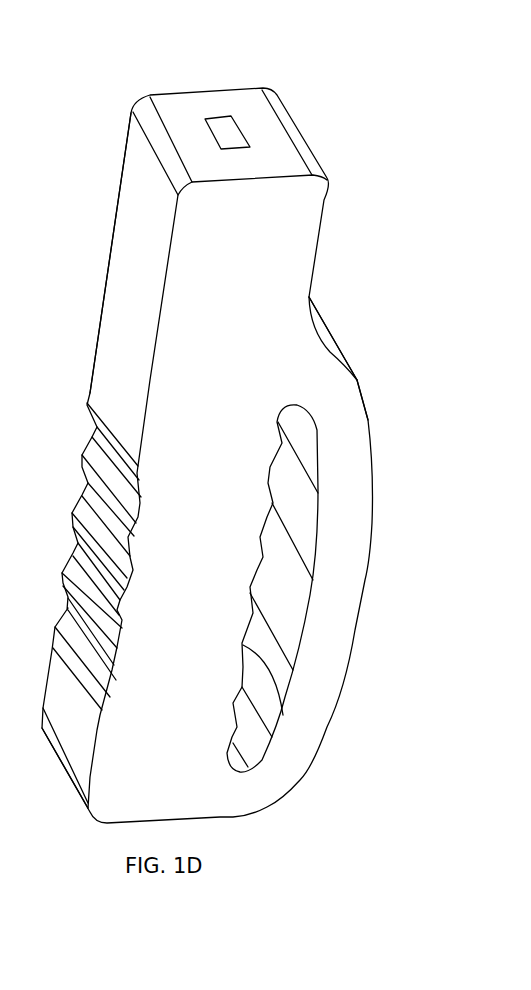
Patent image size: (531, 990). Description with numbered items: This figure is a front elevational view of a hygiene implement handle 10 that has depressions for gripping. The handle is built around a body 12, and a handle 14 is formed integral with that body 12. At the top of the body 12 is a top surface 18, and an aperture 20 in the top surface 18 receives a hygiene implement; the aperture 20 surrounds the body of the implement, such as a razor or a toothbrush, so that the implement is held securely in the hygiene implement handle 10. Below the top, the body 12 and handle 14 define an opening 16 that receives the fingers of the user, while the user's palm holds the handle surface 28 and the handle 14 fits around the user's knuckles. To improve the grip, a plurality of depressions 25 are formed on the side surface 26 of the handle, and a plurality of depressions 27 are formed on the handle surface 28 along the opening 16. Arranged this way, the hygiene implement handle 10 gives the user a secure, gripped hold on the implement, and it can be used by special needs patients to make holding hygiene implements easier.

The hygiene implement handle 10 is at (166, 28).
The body 12 is at (113, 333).
The handle 14 is at (345, 395).
The opening 16 is at (303, 520).
The top surface 18 is at (187, 110).
The aperture 20 is at (237, 120).
The depressions 25 is at (63, 602).
The side surface 26 is at (103, 738).
The depressions 27 is at (282, 708).
The handle surface 28 is at (255, 587).